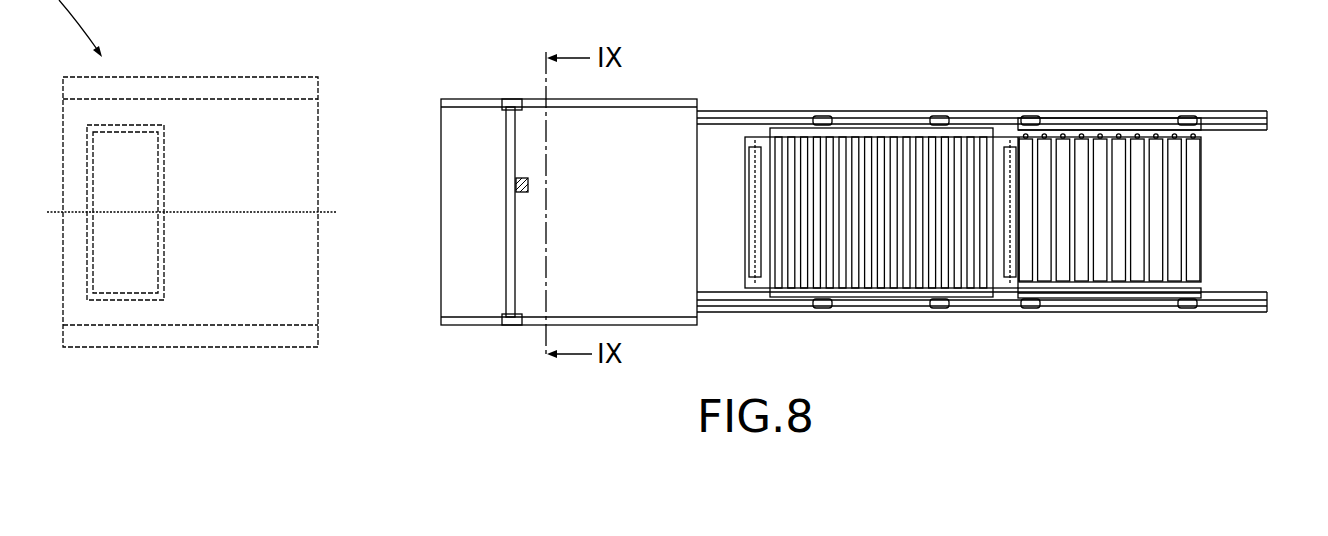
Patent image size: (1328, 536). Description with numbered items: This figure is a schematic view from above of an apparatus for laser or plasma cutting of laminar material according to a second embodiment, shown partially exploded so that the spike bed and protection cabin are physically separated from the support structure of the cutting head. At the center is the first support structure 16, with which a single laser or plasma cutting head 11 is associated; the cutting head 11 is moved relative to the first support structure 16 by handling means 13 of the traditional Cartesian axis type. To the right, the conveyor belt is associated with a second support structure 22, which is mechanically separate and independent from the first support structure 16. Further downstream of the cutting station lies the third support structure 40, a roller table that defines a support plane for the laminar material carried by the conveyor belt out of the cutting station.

The laser or plasma cutting head 11 is at (515, 185).
The handling means 13 is at (510, 268).
The first support structure 16 is at (439, 307).
The second support structure 22 is at (973, 303).
The third support structure 40 is at (1147, 250).